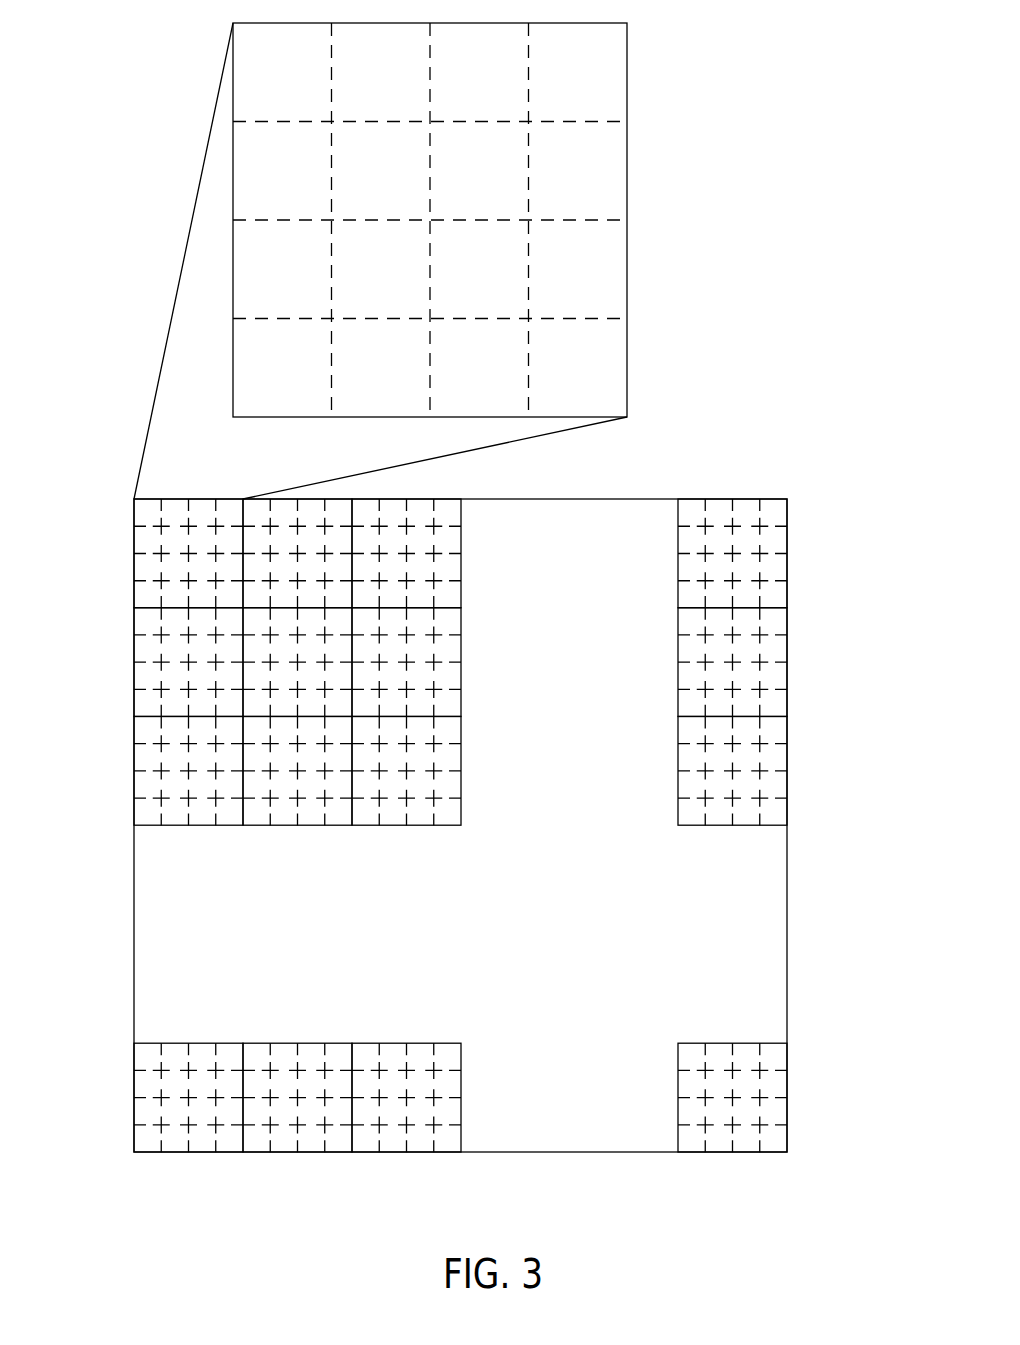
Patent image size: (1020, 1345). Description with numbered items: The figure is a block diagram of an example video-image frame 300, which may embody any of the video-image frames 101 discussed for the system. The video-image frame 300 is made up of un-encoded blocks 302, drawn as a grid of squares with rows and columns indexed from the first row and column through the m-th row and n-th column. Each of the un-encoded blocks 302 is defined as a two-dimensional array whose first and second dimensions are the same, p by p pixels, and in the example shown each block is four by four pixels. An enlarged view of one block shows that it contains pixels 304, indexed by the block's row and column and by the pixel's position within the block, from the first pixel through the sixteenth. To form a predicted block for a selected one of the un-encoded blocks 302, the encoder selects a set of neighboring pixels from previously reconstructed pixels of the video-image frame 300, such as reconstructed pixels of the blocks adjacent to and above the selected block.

The video-image frame 300 is at (787, 55).
The un-encoded blocks 302 is at (826, 1079).
The pixels 304 is at (430, 220).
The video-image frames 101 is at (580, 1155).